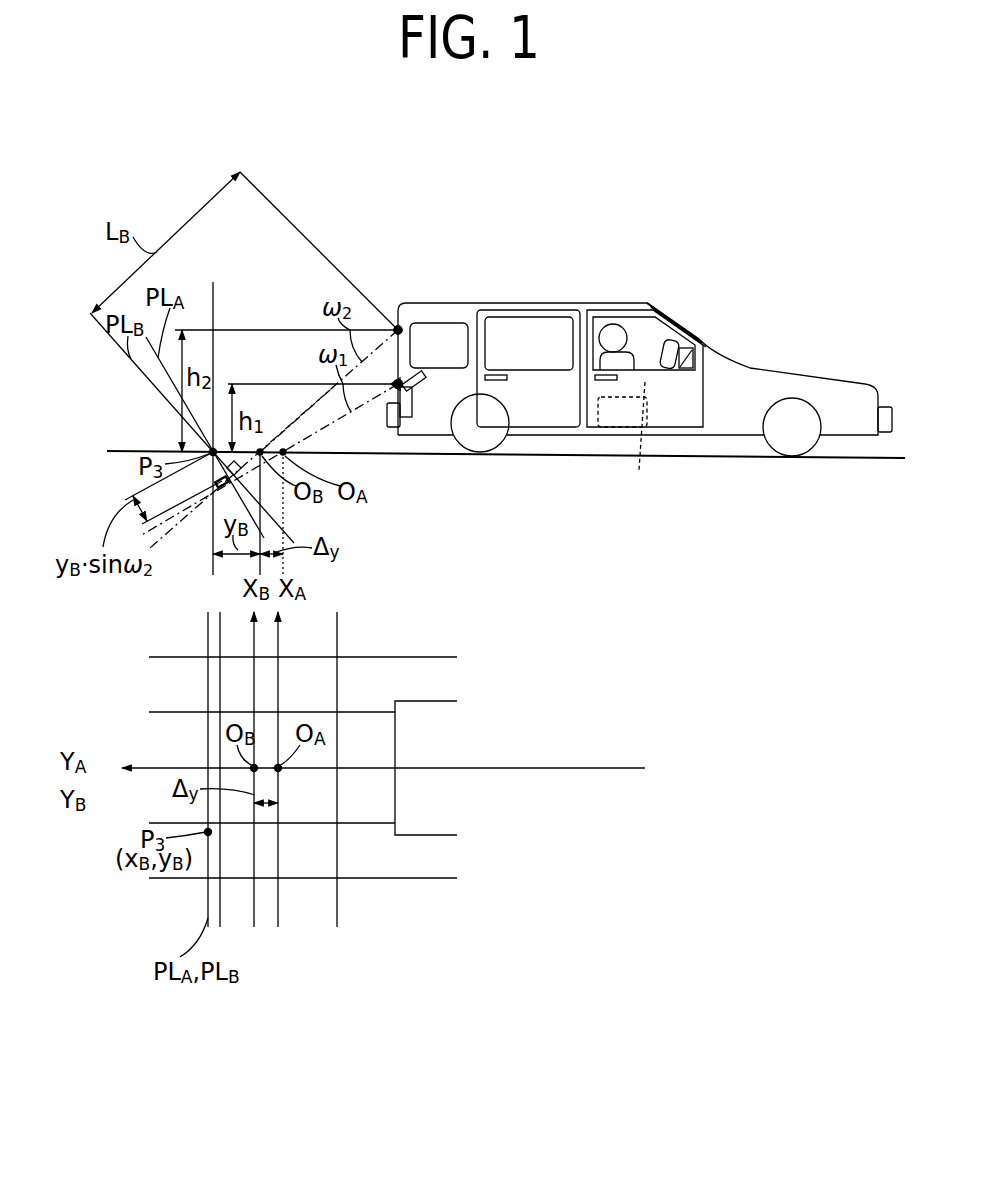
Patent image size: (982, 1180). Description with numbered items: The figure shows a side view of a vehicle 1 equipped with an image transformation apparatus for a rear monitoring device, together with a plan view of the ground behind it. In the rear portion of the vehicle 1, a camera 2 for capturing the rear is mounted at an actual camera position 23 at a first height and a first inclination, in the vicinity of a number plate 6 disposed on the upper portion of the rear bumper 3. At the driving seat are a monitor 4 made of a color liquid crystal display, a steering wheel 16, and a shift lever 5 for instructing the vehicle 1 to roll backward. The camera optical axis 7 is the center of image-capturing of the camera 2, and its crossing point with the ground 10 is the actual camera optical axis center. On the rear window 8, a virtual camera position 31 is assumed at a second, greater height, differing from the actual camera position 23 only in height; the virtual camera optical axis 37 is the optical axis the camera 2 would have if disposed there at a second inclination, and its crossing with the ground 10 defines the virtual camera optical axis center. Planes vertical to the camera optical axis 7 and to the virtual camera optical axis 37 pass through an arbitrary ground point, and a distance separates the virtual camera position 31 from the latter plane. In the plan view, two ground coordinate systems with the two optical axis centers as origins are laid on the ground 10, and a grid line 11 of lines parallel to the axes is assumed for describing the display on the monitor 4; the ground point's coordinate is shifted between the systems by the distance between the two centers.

The vehicle 1 is at (523, 303).
The camera 2 is at (414, 373).
The rear bumper 3 is at (387, 420).
The monitor 4 is at (703, 335).
The shift lever 5 is at (622, 439).
The number plate 6 is at (407, 398).
The camera optical axis 7 is at (292, 424).
The rear window 8 is at (396, 328).
The ground 10 is at (113, 451).
The grid line 11 is at (173, 657).
The steering wheel 16 is at (678, 330).
The actual camera position 23 is at (412, 394).
The virtual camera position 31 is at (400, 327).
The virtual camera optical axis 37 is at (313, 404).